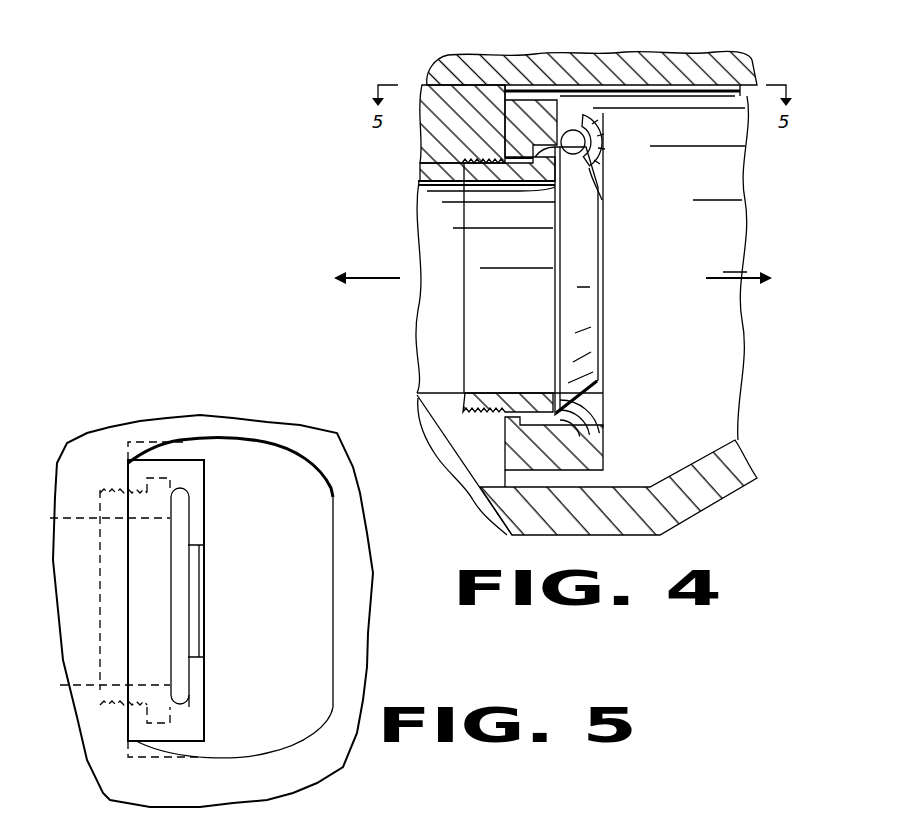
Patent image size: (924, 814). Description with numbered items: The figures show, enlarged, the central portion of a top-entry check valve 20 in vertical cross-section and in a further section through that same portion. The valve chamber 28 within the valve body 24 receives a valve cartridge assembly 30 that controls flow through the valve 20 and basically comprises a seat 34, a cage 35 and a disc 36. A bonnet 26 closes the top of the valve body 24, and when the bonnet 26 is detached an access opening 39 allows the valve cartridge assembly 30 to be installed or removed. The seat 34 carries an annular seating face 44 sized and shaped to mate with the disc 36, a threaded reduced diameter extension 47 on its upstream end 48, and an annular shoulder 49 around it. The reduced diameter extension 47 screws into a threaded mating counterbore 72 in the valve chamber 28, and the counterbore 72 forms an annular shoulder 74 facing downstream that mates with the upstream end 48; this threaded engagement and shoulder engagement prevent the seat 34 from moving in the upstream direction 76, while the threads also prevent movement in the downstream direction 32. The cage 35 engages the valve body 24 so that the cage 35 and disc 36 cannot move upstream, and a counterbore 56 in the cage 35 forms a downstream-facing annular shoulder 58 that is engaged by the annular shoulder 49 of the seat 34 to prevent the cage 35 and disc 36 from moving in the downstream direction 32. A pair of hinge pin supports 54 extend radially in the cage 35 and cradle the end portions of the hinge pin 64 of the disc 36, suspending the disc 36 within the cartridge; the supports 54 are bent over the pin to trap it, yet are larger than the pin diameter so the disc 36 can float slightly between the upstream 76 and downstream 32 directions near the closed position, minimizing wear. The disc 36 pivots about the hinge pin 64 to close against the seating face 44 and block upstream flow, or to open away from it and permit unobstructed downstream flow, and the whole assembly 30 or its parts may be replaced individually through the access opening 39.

In FIG. 4, the valve 20 is at (433, 64).
In FIG. 5, the valve 20 is at (158, 406).
In FIG. 4, the valve body 24 is at (700, 495).
In FIG. 4, the bonnet 26 is at (590, 72).
In FIG. 4, the valve chamber 28 is at (705, 411).
In FIG. 4, the valve cartridge assembly 30 is at (604, 203).
In FIG. 5, the valve cartridge assembly 30 is at (206, 582).
In FIG. 4, the downstream direction 32 is at (753, 281).
In FIG. 4, the seat 34 is at (488, 391).
In FIG. 5, the seat 34 is at (100, 490).
In FIG. 4, the cage 35 is at (518, 95).
In FIG. 5, the cage 35 is at (171, 447).
In FIG. 4, the disc 36 is at (599, 257).
In FIG. 5, the disc 36 is at (181, 495).
In FIG. 4, the access opening 39 is at (707, 100).
In FIG. 5, the access opening 39 is at (313, 650).
In FIG. 4, the annular seating face 44 is at (600, 389).
In FIG. 4, the reduced diameter extension 47 is at (490, 393).
In FIG. 5, the reduced diameter extension 47 is at (117, 692).
In FIG. 5, the upstream end 48 is at (100, 560).
In FIG. 4, the annular shoulder 49 is at (427, 192).
In FIG. 5, the annular shoulder 49 is at (157, 460).
In FIG. 4, the hinge pin supports 54 is at (599, 136).
In FIG. 5, the counterbore 56 is at (182, 698).
In FIG. 4, the annular shoulder 58 is at (503, 153).
In FIG. 5, the annular shoulder 58 is at (130, 460).
In FIG. 4, the hinge pin 64 is at (573, 142).
In FIG. 4, the mating counterbore 72 is at (482, 414).
In FIG. 5, the mating counterbore 72 is at (150, 723).
In FIG. 4, the annular shoulder 74 is at (465, 402).
In FIG. 5, the annular shoulder 74 is at (103, 693).
In FIG. 4, the upstream direction 76 is at (378, 272).